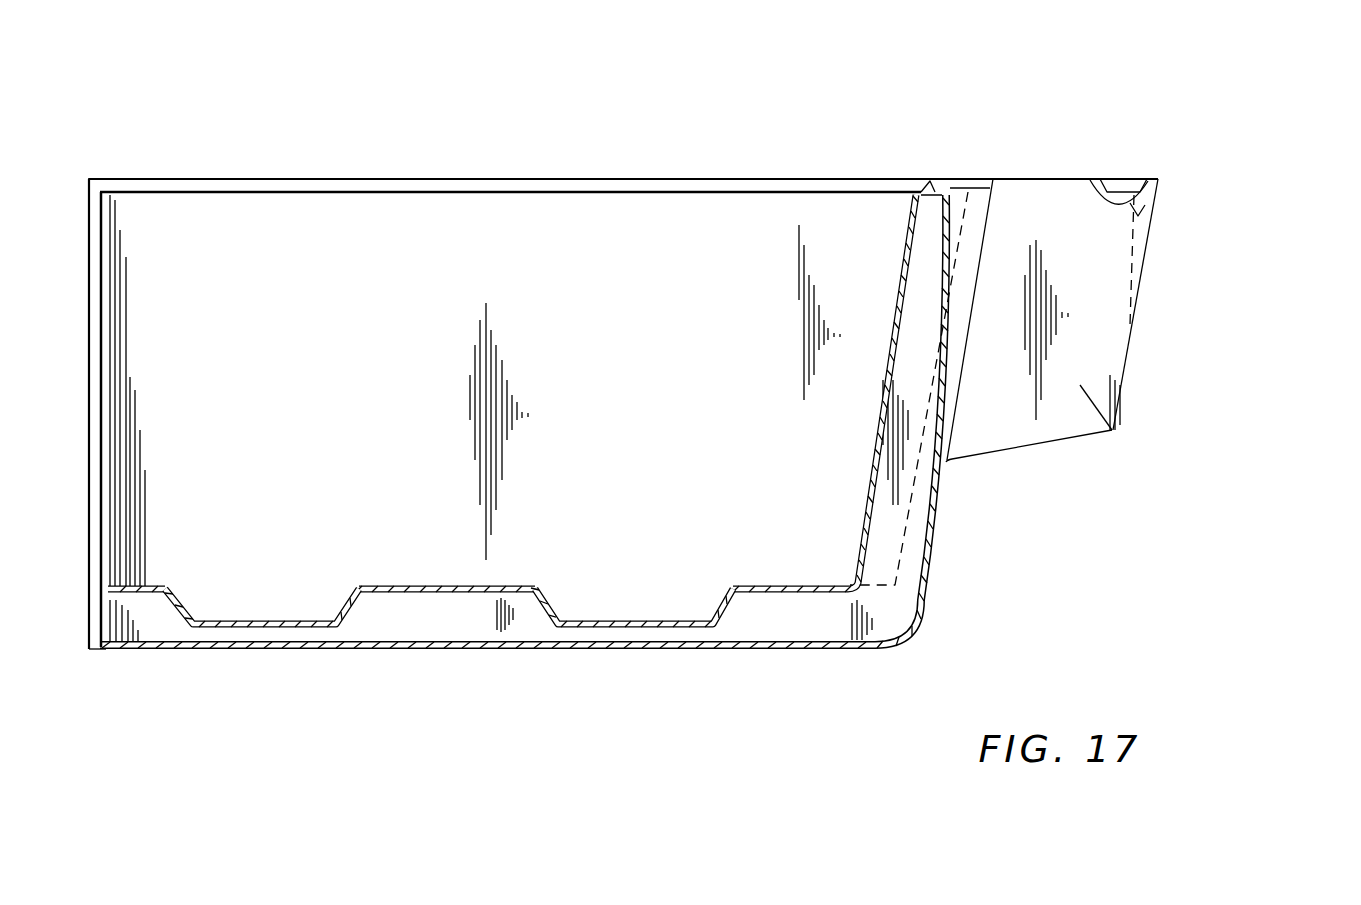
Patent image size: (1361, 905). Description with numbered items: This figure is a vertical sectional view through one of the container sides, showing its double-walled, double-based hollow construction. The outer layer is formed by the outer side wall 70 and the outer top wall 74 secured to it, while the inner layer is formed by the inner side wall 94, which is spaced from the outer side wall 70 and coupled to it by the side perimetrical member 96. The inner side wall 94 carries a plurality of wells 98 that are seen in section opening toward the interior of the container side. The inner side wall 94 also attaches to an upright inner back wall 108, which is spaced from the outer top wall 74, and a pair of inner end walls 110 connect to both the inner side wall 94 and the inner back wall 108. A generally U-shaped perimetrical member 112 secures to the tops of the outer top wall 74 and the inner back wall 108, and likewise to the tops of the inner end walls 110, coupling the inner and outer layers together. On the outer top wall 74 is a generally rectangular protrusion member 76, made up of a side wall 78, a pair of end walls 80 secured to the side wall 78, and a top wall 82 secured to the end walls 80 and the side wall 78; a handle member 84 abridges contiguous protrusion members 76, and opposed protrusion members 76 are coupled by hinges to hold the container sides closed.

The outer side wall 70 is at (323, 644).
The outer top wall 74 is at (933, 530).
The protrusion member 76 is at (1095, 364).
The side wall 78 is at (1128, 362).
The end wall 80 is at (1112, 431).
The top wall 82 is at (1100, 180).
The handle member 84 is at (1164, 201).
The inner side wall 94 is at (165, 588).
The side perimetrical member 96 is at (103, 597).
The well 98 is at (283, 621).
The inner back wall 108 is at (890, 335).
The inner end wall 110 is at (623, 365).
The perimetrical member 112 is at (448, 188).